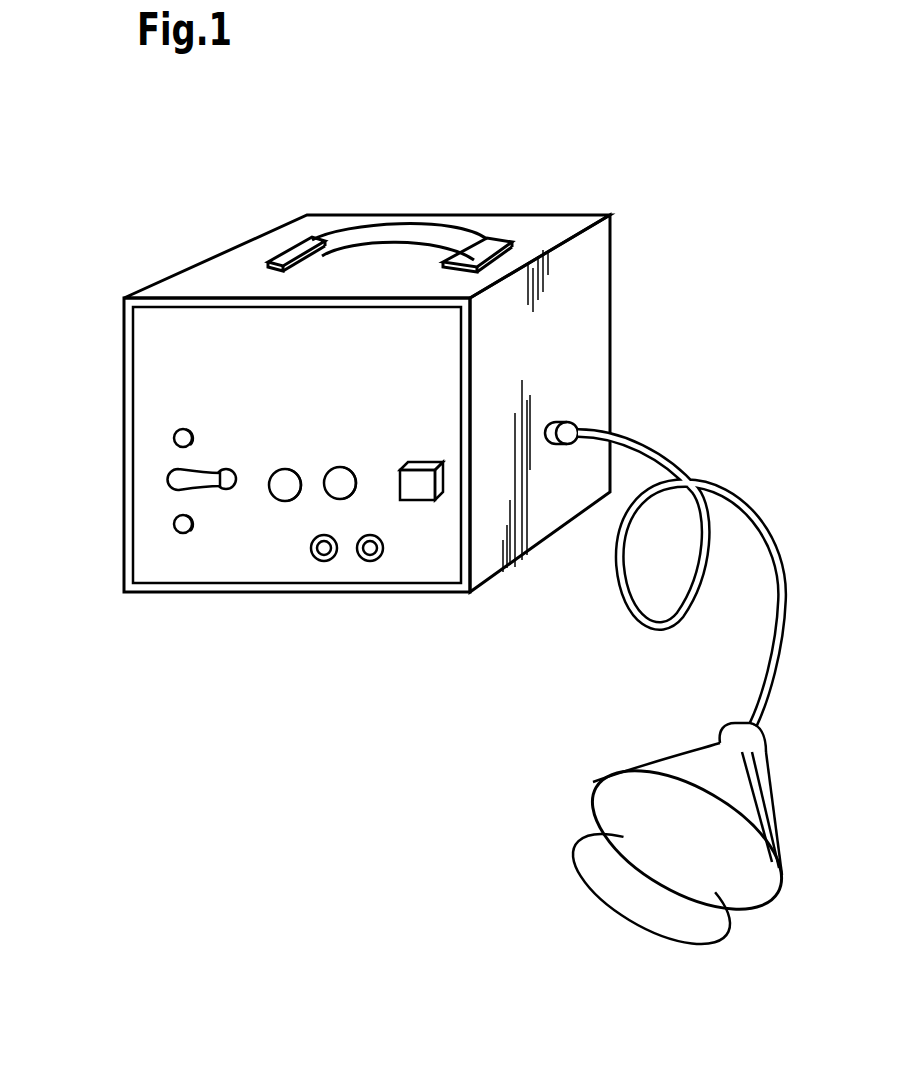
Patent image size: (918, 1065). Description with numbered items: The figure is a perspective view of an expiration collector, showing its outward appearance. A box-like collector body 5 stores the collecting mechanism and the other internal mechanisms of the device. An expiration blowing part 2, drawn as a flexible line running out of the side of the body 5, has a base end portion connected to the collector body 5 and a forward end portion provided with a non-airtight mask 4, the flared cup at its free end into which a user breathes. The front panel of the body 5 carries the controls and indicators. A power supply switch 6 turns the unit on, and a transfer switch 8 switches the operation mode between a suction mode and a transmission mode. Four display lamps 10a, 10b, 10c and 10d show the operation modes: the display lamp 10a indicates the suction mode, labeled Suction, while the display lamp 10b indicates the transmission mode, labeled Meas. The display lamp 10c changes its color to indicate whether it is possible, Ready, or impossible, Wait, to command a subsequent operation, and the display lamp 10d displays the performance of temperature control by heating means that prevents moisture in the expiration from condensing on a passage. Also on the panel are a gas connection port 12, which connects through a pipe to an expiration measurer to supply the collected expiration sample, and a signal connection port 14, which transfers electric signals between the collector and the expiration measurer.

The collector body 5 is at (128, 322).
The expiration blowing part 2 is at (730, 485).
The non-airtight mask 4 is at (762, 806).
The power supply switch 6 is at (420, 500).
The transfer switch 8 is at (176, 480).
The display lamp 10a is at (173, 437).
The display lamp 10b is at (173, 525).
The display lamp 10c is at (279, 500).
The display lamp 10d is at (325, 498).
The gas connection port 12 is at (322, 561).
The signal connection port 14 is at (368, 561).